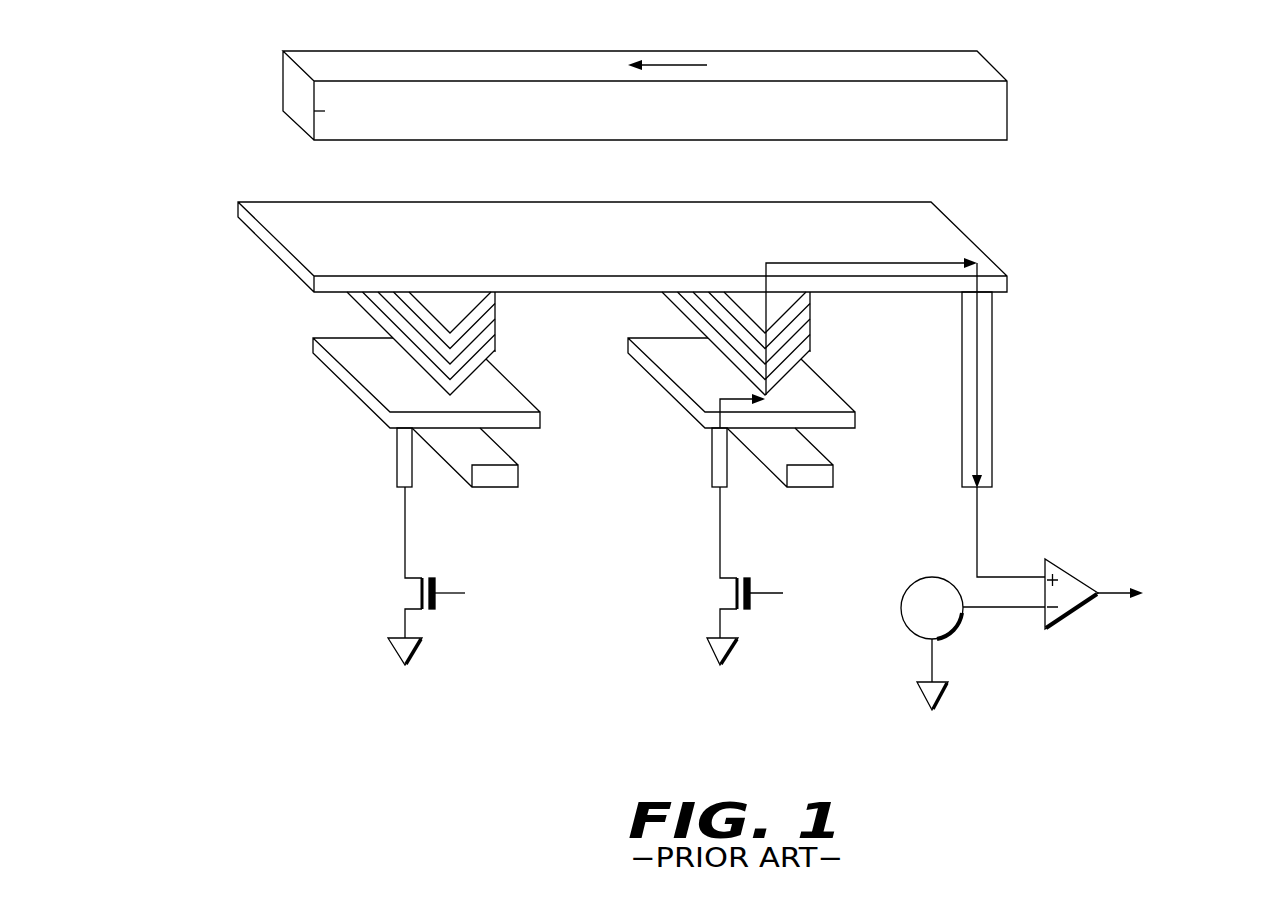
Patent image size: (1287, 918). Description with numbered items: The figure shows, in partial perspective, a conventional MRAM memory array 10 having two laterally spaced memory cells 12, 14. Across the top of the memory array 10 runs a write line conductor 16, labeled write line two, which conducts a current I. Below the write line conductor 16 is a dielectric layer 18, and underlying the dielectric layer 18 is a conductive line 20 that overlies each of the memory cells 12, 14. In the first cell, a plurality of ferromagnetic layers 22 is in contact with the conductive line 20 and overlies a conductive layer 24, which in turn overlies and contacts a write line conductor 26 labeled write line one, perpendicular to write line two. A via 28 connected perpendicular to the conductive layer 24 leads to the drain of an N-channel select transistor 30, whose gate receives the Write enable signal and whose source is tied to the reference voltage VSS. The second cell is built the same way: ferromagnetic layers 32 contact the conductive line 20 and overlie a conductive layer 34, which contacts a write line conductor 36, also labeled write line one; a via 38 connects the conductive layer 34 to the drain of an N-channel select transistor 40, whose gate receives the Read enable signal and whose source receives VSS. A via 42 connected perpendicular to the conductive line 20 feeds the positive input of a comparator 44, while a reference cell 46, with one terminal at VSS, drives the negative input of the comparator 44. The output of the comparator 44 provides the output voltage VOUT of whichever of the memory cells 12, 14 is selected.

The memory array 10 is at (585, 745).
The memory cell 12 is at (315, 451).
The memory cell 14 is at (631, 449).
The write line conductor 16 is at (314, 112).
The dielectric layer 18 is at (357, 161).
The conductive line 20 is at (372, 247).
The ferromagnetic layers 22 is at (342, 314).
The conductive layer 24 is at (402, 382).
The write line conductor 26 is at (493, 446).
The via 28 is at (397, 449).
The select transistor 30 is at (420, 594).
The ferromagnetic layers 32 is at (658, 314).
The conductive layer 34 is at (720, 382).
The write line conductor 36 is at (808, 445).
The via 38 is at (712, 449).
The select transistor 40 is at (735, 594).
The via 42 is at (988, 377).
The comparator 44 is at (1066, 572).
The reference cell 46 is at (960, 633).